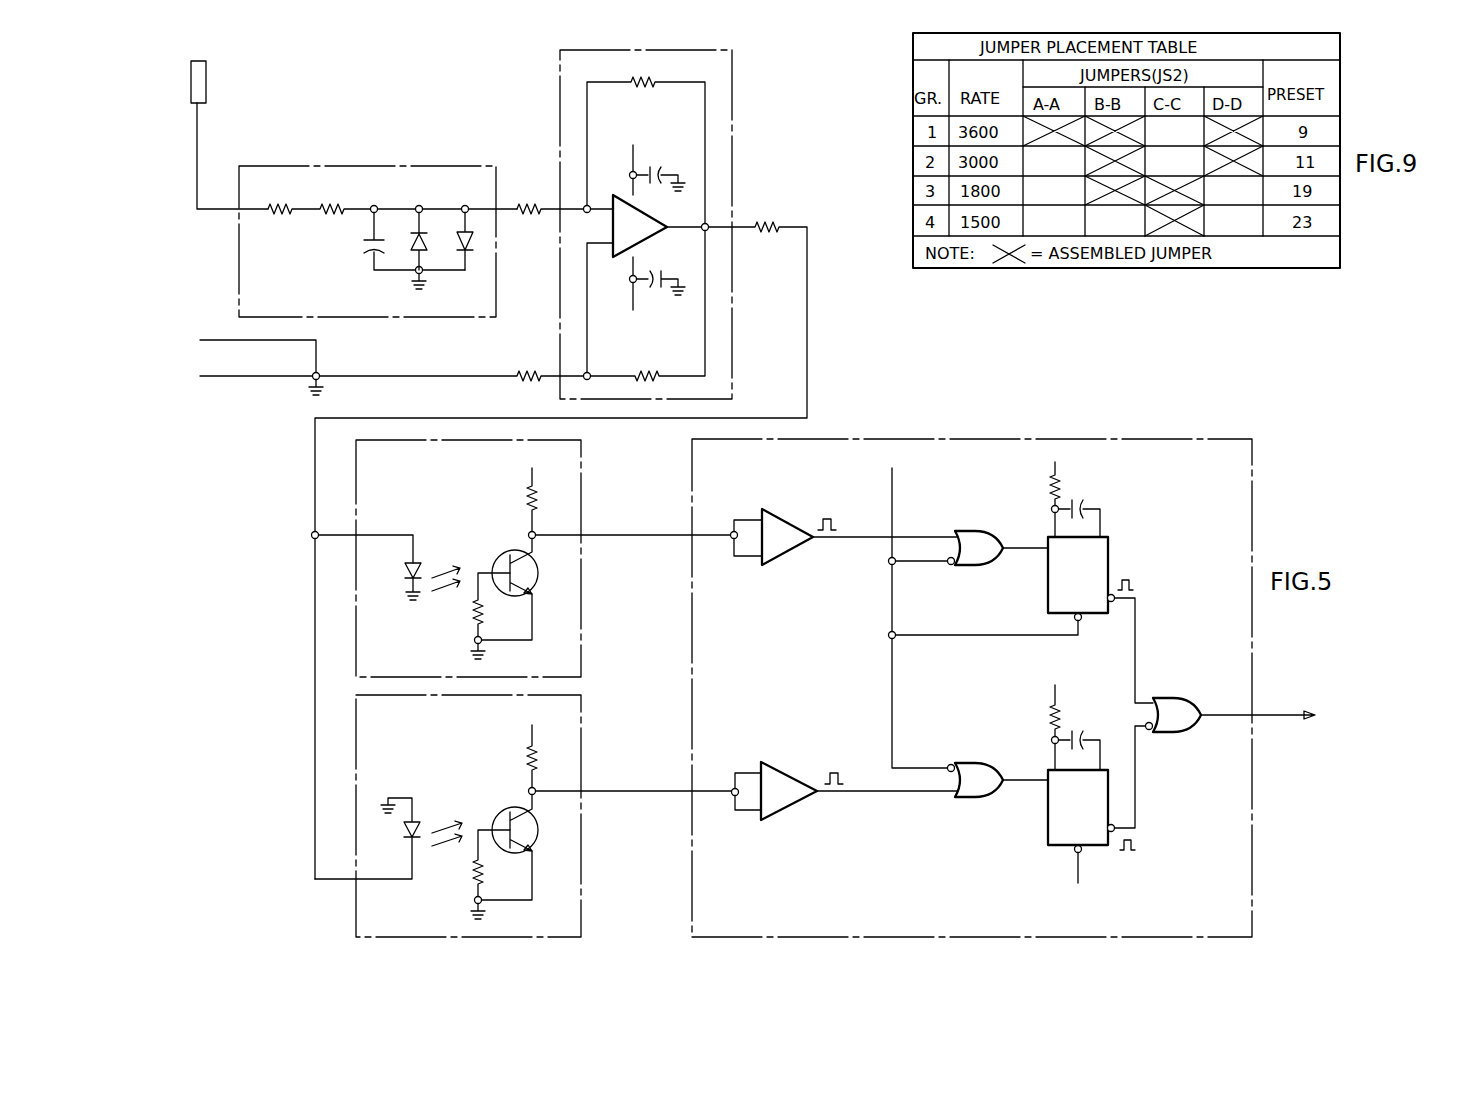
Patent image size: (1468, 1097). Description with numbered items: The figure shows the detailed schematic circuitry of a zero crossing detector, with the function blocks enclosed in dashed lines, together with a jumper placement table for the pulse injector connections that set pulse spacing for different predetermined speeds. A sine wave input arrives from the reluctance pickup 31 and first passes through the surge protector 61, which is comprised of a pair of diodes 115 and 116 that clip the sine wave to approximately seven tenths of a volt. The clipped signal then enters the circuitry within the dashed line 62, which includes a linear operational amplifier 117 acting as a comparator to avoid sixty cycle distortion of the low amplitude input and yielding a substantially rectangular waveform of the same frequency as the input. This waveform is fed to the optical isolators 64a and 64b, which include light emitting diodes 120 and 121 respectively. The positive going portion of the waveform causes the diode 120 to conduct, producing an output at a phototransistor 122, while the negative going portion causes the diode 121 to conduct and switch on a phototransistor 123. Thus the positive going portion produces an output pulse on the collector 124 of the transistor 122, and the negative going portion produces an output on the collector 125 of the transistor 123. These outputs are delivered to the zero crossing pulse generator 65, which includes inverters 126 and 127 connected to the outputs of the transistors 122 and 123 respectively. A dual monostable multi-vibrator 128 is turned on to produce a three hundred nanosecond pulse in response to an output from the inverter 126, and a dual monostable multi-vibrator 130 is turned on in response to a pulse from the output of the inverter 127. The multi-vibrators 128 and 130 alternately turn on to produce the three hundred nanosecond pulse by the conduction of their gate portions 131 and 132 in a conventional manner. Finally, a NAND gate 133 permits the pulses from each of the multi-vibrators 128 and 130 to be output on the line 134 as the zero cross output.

The reluctance pickup 31 is at (207, 78).
The surge protector 61 is at (286, 165).
The comparator circuitry (dashed line block) 62 is at (560, 101).
The optical isolator 64a is at (583, 461).
The optical isolator 64b is at (583, 715).
The zero crossing pulse generator 65 is at (692, 459).
The diode 115 is at (410, 245).
The diode 116 is at (457, 245).
The linear operational amplifier 117 is at (656, 220).
The light emitting diode 120 is at (400, 569).
The light emitting diode 121 is at (403, 829).
The phototransistor 122 is at (531, 578).
The phototransistor 123 is at (509, 815).
The collector 124 is at (535, 531).
The collector 125 is at (535, 787).
The inverter 126 is at (799, 505).
The inverter 127 is at (775, 763).
The dual monostable multi-vibrator 128 is at (1048, 541).
The dual monostable multi-vibrator 130 is at (1048, 772).
The gate portion 131 is at (972, 533).
The gate portion 132 is at (978, 764).
The NAND gate 133 is at (1173, 699).
The output line 134 is at (1212, 713).